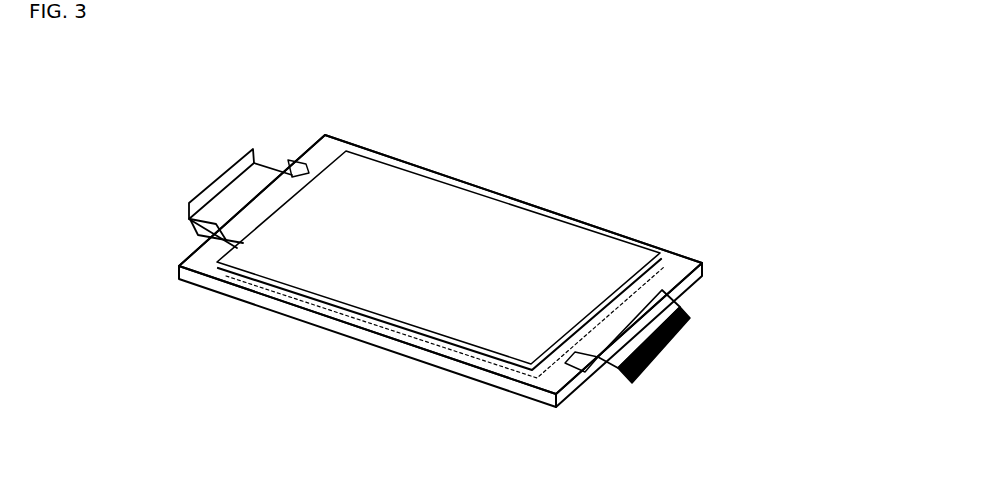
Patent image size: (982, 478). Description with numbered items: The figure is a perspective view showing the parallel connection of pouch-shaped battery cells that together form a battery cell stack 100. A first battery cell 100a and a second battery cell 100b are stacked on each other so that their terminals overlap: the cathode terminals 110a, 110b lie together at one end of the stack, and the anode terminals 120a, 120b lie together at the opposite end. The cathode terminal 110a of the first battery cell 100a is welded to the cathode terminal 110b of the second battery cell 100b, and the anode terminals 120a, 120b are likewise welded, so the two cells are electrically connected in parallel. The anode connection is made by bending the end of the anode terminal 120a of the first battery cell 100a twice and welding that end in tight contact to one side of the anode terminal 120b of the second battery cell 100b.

The battery cell stack 100 is at (138, 85).
The first battery cell 100a is at (527, 204).
The second battery cell 100b is at (302, 319).
The cathode terminal 110a is at (220, 187).
The cathode terminal 110b is at (194, 231).
The anode terminal 120a is at (687, 308).
The anode terminal 120b is at (660, 353).